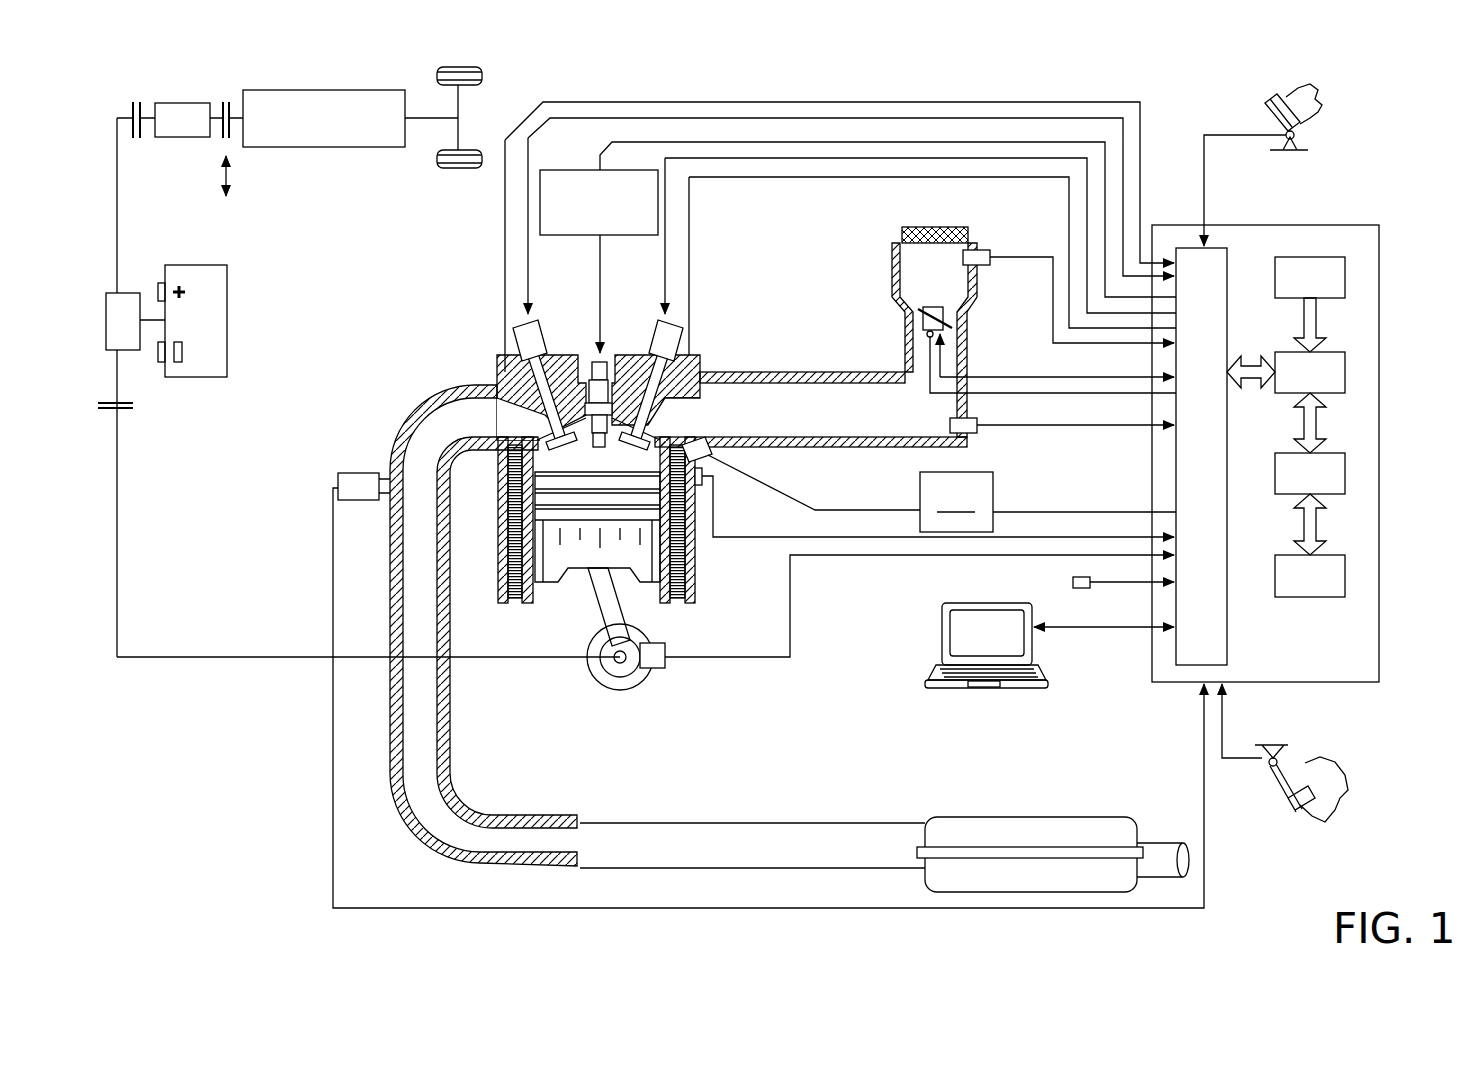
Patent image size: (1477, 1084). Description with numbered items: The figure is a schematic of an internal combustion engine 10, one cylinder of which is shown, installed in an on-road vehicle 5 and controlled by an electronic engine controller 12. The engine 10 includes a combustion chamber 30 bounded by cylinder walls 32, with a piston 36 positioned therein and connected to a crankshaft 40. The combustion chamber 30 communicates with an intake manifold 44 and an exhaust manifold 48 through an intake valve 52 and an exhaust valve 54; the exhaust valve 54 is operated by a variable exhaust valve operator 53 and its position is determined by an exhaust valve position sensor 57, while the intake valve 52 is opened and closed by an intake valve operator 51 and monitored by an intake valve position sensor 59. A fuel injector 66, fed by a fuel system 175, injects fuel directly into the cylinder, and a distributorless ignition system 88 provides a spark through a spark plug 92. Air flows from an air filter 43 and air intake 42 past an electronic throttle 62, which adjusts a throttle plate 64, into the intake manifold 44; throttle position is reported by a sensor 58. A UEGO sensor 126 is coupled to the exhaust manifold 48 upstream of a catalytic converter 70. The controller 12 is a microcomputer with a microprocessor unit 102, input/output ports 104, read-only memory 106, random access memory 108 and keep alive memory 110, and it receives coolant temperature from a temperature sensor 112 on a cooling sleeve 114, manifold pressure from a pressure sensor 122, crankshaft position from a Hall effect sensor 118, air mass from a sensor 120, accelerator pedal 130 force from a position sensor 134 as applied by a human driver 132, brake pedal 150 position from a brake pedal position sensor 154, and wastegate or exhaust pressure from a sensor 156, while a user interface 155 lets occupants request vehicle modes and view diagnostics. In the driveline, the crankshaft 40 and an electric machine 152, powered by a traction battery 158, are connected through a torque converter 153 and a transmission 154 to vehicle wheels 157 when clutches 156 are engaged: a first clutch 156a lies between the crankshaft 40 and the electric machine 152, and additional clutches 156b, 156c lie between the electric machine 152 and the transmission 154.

The vehicle 5 is at (245, 850).
The internal combustion engine 10 is at (432, 306).
The electronic engine controller 12 is at (1368, 225).
The combustion chamber 30 is at (510, 572).
The cylinder walls 32 is at (540, 598).
The piston 36 is at (582, 553).
The crankshaft 40 is at (613, 673).
The air intake 42 is at (945, 284).
The air filter 43 is at (902, 233).
The intake manifold 44 is at (780, 422).
The exhaust manifold 48 is at (478, 429).
The intake valve operator 51 is at (660, 318).
The intake valve 52 is at (642, 420).
The variable exhaust valve operator 53 is at (538, 322).
The exhaust valve 54 is at (497, 375).
The exhaust valve position sensor 57 is at (520, 342).
The throttle position sensor 58 is at (926, 337).
The intake valve position sensor 59 is at (678, 338).
The electronic throttle 62 is at (952, 316).
The throttle plate 64 is at (918, 311).
The fuel injector 66 is at (715, 455).
The catalytic converter 70 is at (965, 817).
The distributorless ignition system 88 is at (556, 170).
The spark plug 92 is at (604, 350).
The microprocessor unit 102 is at (1350, 372).
The input/output ports 104 is at (1228, 258).
The read-only memory 106 is at (1350, 275).
The random access memory 108 is at (1350, 472).
The keep alive memory 110 is at (1350, 575).
The temperature sensor 112 is at (712, 487).
The cooling sleeve 114 is at (703, 563).
The Hall effect sensor 118 is at (662, 645).
The air mass sensor 120 is at (986, 250).
The pressure sensor 122 is at (975, 433).
The Universal Exhaust Gas Oxygen sensor 126 is at (338, 478).
The accelerator pedal 130 is at (1268, 112).
The human driver 132 is at (1320, 98).
The position sensor 134 is at (1302, 140).
The brake pedal 150 is at (1298, 812).
The electric machine 152 is at (122, 292).
The torque converter 153 is at (163, 103).
The transmission 154 is at (1264, 758).
The user interface 155 is at (1040, 690).
The turbocharger wastegate position sensor 156 is at (1082, 588).
The first clutch 156a is at (125, 412).
The clutch 156b is at (137, 140).
The clutch 156c is at (227, 102).
The vehicle wheels 157 is at (450, 166).
The traction battery 158 is at (228, 308).
The fuel system 175 is at (1048, 502).